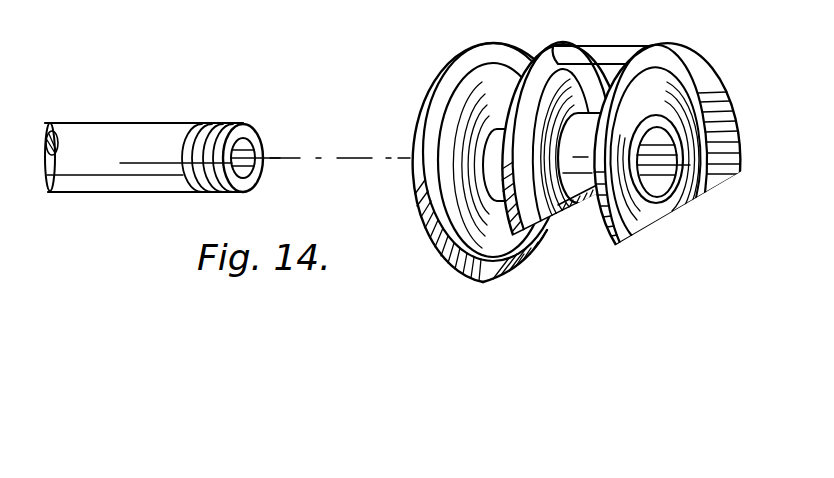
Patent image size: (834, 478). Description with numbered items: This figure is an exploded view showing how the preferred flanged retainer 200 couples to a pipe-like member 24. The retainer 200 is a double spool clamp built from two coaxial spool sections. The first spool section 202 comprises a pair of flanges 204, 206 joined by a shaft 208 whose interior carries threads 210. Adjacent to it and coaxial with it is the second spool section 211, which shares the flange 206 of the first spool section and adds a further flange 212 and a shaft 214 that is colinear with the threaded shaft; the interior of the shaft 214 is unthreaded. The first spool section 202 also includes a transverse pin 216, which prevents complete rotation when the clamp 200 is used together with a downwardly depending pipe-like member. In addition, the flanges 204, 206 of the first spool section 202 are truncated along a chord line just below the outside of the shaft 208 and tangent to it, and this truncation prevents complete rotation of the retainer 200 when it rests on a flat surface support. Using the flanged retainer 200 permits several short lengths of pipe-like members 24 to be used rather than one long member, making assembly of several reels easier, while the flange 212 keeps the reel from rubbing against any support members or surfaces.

The pipe-like member 24 is at (175, 132).
The flanged retainer 200 is at (704, 163).
The first spool section 202 is at (711, 171).
The flange 204 is at (704, 144).
The flange 206 is at (545, 50).
The shaft 208 is at (592, 205).
The interior threads 210 is at (681, 197).
The second spool section 211 is at (462, 108).
The flange 212 is at (447, 143).
The shaft 214 is at (480, 150).
The transverse pin 216 is at (620, 50).